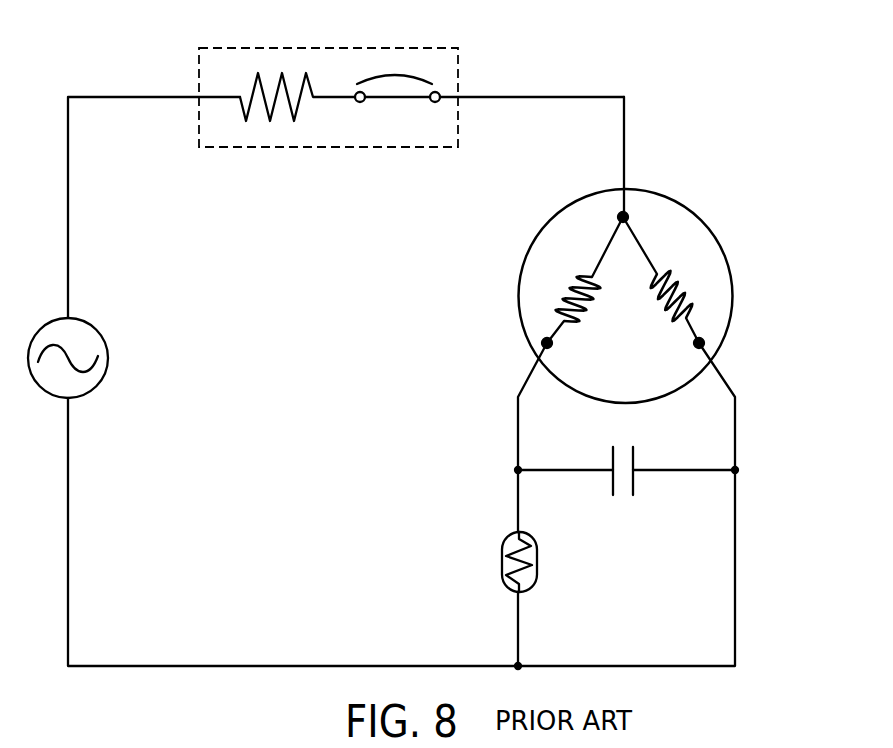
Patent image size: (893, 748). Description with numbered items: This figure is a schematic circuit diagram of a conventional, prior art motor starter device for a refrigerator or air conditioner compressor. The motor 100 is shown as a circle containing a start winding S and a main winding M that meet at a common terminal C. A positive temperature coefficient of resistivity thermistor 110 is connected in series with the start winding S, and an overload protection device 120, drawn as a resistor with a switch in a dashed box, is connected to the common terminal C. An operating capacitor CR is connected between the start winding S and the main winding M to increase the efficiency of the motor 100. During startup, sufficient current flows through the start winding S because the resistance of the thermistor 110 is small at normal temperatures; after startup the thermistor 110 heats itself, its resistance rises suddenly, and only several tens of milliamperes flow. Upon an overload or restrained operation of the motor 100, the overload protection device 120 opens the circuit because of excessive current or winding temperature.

The motor 100 is at (641, 275).
The positive temperature coefficient of resistivity thermistor 110 is at (537, 562).
The overload protection device 120 is at (333, 48).
The common terminal C is at (628, 212).
The start winding S is at (558, 292).
The main winding M is at (690, 291).
The operating capacitor CR is at (626, 483).